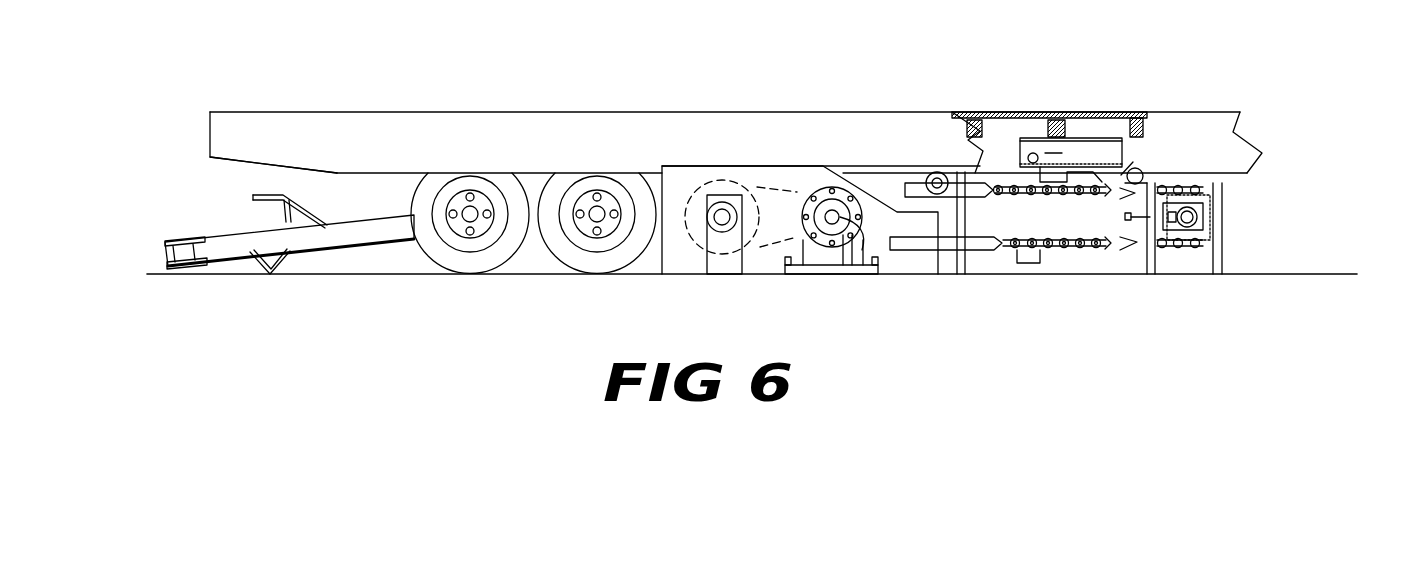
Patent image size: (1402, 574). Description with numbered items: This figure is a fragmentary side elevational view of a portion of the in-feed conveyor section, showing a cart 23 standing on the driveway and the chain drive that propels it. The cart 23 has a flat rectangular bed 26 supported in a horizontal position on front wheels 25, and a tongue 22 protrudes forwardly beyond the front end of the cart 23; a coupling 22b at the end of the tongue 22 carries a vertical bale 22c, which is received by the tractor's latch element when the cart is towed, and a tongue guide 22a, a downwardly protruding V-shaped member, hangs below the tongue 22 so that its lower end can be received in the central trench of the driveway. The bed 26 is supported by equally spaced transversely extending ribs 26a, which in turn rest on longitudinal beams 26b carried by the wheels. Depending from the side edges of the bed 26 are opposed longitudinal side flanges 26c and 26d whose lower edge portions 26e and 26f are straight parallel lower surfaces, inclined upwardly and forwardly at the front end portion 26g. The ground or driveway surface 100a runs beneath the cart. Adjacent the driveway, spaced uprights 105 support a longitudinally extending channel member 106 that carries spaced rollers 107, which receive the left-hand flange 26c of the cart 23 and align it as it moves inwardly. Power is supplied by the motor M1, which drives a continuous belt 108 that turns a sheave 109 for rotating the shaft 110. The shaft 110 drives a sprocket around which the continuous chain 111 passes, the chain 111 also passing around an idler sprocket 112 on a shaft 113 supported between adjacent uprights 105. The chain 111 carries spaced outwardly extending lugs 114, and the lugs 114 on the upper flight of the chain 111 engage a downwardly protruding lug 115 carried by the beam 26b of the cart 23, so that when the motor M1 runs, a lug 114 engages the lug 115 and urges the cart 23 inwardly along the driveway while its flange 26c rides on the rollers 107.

The tongue 22 is at (218, 242).
The tongue guide 22a is at (283, 275).
The coupling 22b is at (165, 242).
The vertical bale 22c is at (167, 269).
The cart 23 is at (526, 94).
The front wheels 25 is at (467, 269).
The bed 26 is at (310, 112).
The transversely extending ribs 26a is at (1137, 112).
The longitudinal beams 26b is at (1078, 130).
The longitudinal side flange 26c is at (648, 112).
The longitudinal side flange 26d is at (1005, 130).
The lower edge portion 26e is at (388, 174).
The lower edge portion 26f is at (952, 138).
The inclined front end portion 26g is at (305, 169).
The ground 100a is at (1318, 274).
The uprights 105 is at (961, 274).
The channel member 106 is at (873, 190).
The rollers 107 is at (930, 175).
The continuous belt 108 is at (757, 263).
The sheave 109 is at (693, 240).
The shaft 110 is at (722, 210).
The continuous chain 111 is at (1088, 242).
The idler sprocket 112 is at (1187, 233).
The shaft 113 is at (1207, 210).
The lugs 114 is at (1080, 182).
The lug 115 is at (1098, 140).
The motor M1 is at (832, 262).